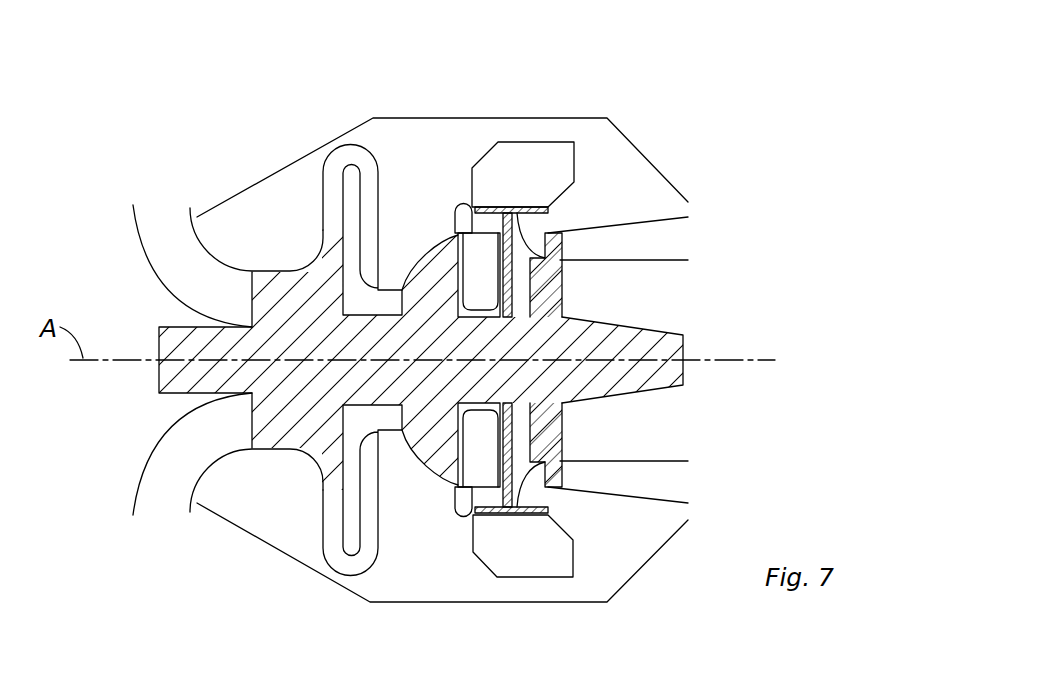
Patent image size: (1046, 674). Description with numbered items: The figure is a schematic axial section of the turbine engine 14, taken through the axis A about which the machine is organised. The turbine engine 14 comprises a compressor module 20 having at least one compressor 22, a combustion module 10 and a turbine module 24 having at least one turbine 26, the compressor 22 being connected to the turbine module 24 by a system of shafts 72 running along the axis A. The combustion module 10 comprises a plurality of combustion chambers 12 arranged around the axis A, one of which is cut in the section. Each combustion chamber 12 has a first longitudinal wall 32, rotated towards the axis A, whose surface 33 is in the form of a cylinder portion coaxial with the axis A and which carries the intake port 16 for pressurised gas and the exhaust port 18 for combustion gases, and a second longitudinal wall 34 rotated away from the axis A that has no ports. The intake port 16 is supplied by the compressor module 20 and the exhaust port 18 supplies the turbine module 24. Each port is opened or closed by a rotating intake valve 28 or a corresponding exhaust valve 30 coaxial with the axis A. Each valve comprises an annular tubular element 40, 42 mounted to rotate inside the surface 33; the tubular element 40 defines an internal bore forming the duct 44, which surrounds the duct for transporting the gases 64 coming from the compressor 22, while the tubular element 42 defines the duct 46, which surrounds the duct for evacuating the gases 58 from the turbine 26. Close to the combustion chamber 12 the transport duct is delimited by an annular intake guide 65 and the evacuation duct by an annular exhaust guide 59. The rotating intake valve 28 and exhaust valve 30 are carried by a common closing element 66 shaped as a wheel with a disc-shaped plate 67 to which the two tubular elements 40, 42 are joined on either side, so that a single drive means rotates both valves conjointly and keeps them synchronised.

The combustion module 10 is at (560, 96).
The combustion chamber 12 is at (565, 167).
The turbine engine 14 is at (718, 112).
The intake port 16 is at (484, 197).
The exhaust port 18 is at (553, 200).
The compressor module 20 is at (455, 102).
The compressor 22 is at (298, 432).
The turbine module 24 is at (567, 412).
The turbine 26 is at (563, 299).
The rotating intake valve 28 is at (455, 250).
The exhaust valve 30 is at (562, 262).
The first longitudinal wall 32 is at (537, 198).
The surface 33 is at (485, 197).
The second longitudinal wall 34 is at (503, 133).
The tubular element 40 is at (468, 210).
The tubular element 42 is at (548, 210).
The duct 44 is at (490, 495).
The duct 46 is at (533, 495).
The duct for evacuating the gases 58 is at (531, 222).
The annular exhaust guide 59 is at (519, 213).
The duct for transporting the gases 64 is at (484, 278).
The annular intake guide 65 is at (482, 292).
The common closing element 66 is at (556, 514).
The plate 67 is at (512, 440).
The system of shafts 72 is at (679, 375).